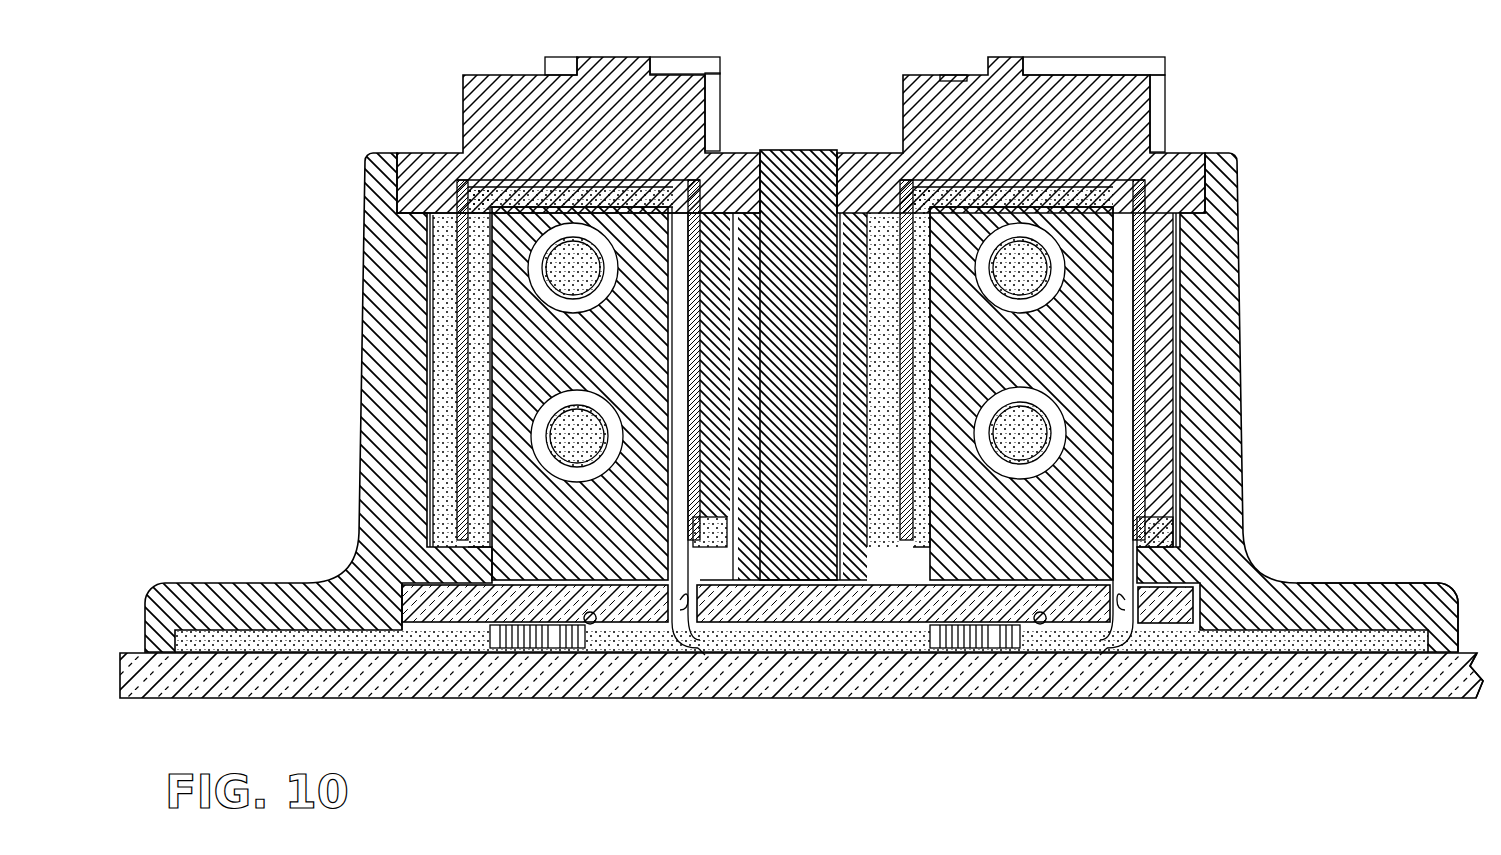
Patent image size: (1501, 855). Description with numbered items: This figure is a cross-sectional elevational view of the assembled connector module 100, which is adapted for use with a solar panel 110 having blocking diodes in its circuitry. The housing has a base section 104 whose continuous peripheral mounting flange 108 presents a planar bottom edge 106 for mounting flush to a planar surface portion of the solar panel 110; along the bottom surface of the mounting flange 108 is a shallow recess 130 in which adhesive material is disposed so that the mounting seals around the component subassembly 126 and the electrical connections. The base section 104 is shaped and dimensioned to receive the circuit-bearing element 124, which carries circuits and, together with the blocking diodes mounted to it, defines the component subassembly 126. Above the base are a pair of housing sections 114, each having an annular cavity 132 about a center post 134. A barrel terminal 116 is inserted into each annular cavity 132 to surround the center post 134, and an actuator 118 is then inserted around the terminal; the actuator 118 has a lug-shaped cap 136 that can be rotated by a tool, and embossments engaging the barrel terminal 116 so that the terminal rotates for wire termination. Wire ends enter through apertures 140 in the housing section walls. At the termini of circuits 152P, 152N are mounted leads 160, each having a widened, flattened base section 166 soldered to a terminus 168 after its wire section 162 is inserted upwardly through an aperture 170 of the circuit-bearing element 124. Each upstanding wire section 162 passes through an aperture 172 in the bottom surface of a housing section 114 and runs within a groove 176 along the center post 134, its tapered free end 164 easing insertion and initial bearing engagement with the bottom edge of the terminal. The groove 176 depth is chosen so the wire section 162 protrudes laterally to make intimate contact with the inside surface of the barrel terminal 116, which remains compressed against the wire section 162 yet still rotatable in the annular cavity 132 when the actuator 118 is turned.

The connector module 100 is at (1268, 62).
The base section 104 is at (1335, 586).
The planar bottom edge 106 is at (1455, 660).
The mounting flange 108 is at (1462, 620).
The solar panel 110 is at (1277, 697).
The housing section 114 is at (383, 333).
The barrel terminal 116 is at (447, 345).
The actuator 118 is at (423, 156).
The circuit-bearing element 124 is at (452, 606).
The component subassembly 126 is at (413, 606).
The shallow recess 130 is at (185, 650).
The annular cavity 132 is at (435, 287).
The center post 134 is at (548, 378).
The lug-shaped cap 136 is at (487, 98).
The aperture 140 is at (598, 292).
The circuit 152P is at (524, 634).
The circuit 152N is at (950, 634).
The lead 160 is at (682, 614).
The wire section 162 is at (692, 245).
The free end 164 is at (690, 197).
The base section 166 is at (638, 634).
The terminus 168 is at (594, 612).
The aperture 170 is at (700, 648).
The aperture 172 is at (690, 560).
The groove 176 is at (697, 285).